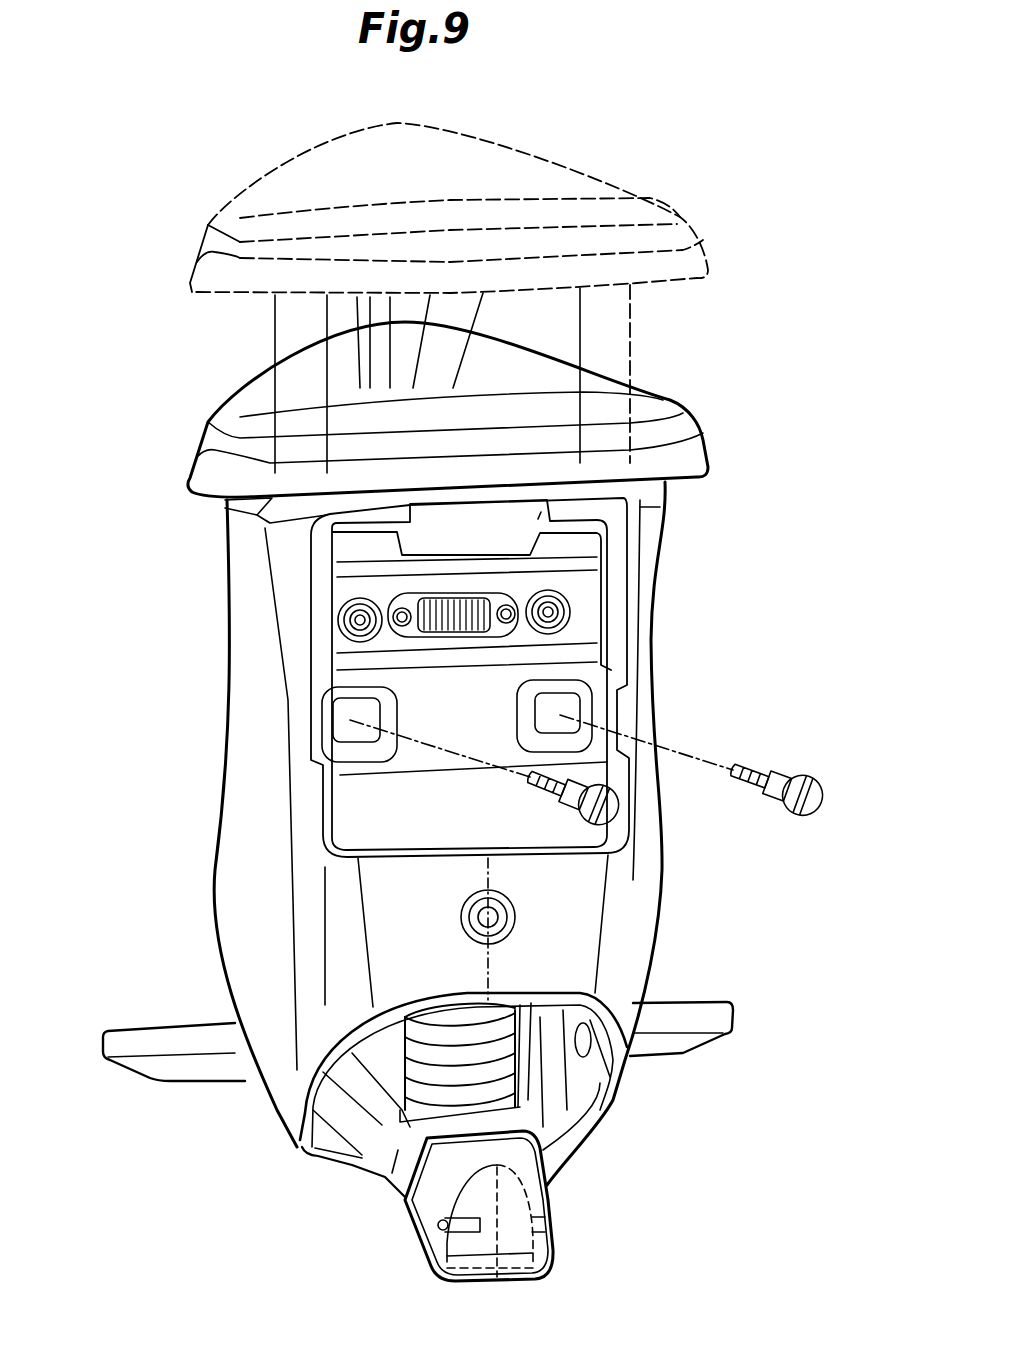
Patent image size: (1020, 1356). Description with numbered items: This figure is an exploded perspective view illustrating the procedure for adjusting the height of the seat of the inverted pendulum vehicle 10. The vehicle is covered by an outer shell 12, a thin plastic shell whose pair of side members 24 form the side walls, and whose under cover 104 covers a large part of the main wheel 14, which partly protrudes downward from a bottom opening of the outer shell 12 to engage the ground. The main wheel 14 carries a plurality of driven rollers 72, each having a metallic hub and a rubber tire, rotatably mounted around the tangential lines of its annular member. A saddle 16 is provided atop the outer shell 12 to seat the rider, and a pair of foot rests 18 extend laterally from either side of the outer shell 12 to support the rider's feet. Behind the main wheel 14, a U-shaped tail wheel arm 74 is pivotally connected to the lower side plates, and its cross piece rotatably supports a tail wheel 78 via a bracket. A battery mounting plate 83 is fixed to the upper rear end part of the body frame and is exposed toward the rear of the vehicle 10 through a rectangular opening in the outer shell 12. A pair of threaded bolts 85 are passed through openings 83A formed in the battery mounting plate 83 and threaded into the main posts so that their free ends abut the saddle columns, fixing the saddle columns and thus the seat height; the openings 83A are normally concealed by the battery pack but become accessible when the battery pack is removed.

The inverted pendulum vehicle 10 is at (748, 480).
The outer shell 12 is at (660, 575).
The main wheel 14 is at (414, 1097).
The saddle 16 is at (652, 392).
The foot rests 18 is at (158, 1030).
The side members 24 is at (228, 852).
The driven rollers 72 is at (557, 1027).
The tail wheel arm 74 is at (580, 1127).
The tail wheel 78 is at (550, 1248).
The battery mounting plate 83 is at (607, 613).
The openings 83A is at (343, 686).
The threaded bolts 85 is at (787, 773).
The under cover 104 is at (553, 1057).